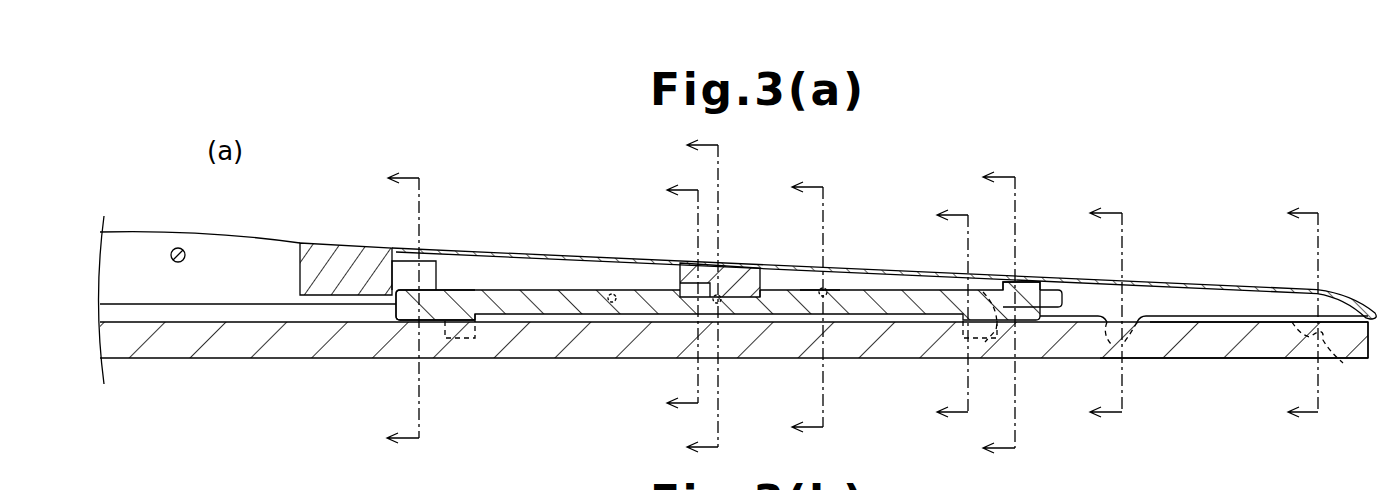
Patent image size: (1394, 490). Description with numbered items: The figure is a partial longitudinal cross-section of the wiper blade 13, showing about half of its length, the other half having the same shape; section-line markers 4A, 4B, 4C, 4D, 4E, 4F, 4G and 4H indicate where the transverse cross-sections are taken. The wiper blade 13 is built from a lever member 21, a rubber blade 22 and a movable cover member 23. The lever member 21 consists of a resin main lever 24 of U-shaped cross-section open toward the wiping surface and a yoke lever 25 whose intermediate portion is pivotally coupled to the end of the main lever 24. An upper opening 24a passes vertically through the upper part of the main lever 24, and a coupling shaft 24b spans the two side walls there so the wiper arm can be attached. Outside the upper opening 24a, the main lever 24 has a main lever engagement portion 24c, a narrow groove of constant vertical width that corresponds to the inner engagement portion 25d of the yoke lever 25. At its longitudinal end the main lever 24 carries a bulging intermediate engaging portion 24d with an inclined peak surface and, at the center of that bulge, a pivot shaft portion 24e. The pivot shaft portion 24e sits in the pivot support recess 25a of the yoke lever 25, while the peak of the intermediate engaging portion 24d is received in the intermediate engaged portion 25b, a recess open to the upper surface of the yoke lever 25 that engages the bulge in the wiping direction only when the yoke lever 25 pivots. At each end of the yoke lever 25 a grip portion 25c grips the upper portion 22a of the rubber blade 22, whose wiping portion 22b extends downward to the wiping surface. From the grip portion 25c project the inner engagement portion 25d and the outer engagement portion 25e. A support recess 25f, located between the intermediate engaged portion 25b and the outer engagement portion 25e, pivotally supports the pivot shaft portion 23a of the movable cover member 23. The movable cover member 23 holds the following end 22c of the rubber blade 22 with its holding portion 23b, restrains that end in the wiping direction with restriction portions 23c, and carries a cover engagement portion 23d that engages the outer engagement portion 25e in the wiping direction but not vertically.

The wiper blade 13 is at (525, 183).
The lever member 21 is at (521, 250).
The rubber blade 22 is at (225, 358).
The upper portion 22a is at (1178, 320).
The wiping portion 22b is at (1158, 359).
The following end 22c is at (1232, 348).
The movable cover member 23 is at (1152, 281).
The pivot shaft portion 23a is at (818, 283).
The holding portion 23b is at (1343, 362).
The restriction portion 23c is at (1108, 326).
The cover engagement portion 23d is at (1058, 298).
The main lever 24 is at (343, 245).
The upper opening 24a is at (224, 243).
The coupling shaft 24b is at (173, 248).
The main lever engagement portion 24c is at (437, 273).
The intermediate engaging portion 24d is at (680, 288).
The pivot shaft portion 24e is at (728, 268).
The yoke lever 25 is at (572, 290).
The pivot support recess 25a is at (720, 303).
The intermediate engaged portion 25b is at (758, 300).
The grip portion 25c is at (472, 338).
The inner engagement portion 25d is at (420, 312).
The outer engagement portion 25e is at (1030, 292).
The support recess 25f is at (850, 340).
The section line 4A is at (407, 309).
The section line 4B is at (662, 296).
The section line 4C is at (682, 297).
The section line 4D is at (813, 308).
The section line 4E is at (955, 313).
The section line 4F is at (1001, 314).
The section line 4G is at (1110, 313).
The section line 4H is at (1308, 313).